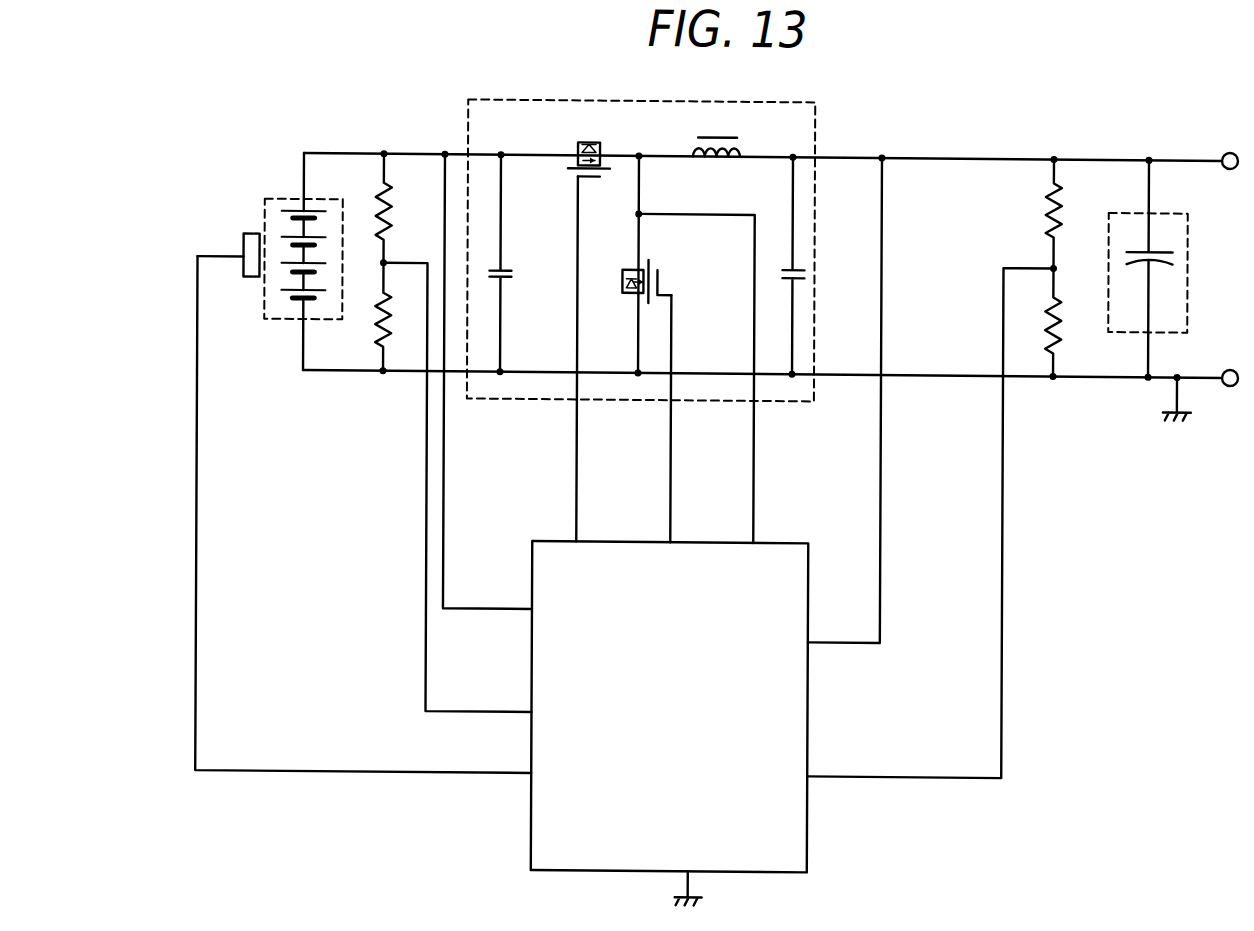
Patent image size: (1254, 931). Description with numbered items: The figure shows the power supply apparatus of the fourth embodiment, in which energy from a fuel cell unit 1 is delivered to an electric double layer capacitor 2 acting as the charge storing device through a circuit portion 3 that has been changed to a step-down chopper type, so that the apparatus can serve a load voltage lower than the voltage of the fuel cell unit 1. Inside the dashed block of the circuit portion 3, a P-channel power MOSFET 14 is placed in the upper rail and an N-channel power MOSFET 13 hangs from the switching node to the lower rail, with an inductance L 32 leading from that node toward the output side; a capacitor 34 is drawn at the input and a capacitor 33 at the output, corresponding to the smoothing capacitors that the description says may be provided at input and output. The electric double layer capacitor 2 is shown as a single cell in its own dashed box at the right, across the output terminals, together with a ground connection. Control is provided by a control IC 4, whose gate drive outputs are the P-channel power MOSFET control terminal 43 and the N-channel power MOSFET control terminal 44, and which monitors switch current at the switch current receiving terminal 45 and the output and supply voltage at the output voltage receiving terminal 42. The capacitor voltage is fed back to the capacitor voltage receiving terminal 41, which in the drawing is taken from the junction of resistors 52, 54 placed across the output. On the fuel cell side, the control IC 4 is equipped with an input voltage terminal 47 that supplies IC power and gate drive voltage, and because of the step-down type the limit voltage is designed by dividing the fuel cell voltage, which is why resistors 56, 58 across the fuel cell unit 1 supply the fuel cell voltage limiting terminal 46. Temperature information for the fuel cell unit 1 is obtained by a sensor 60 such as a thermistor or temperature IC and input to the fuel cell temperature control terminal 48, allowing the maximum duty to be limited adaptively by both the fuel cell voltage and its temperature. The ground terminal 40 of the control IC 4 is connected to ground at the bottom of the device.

The fuel cell unit 1 is at (288, 198).
The electric double layer capacitor 2 is at (1189, 231).
The circuit portion 3 is at (467, 106).
The control IC 4 is at (811, 851).
The N-channel power MOSFET 13 is at (646, 258).
The P-channel power MOSFET 14 is at (590, 133).
The inductance L 32 is at (720, 128).
The output capacitor 33 is at (806, 271).
The input capacitor 34 is at (513, 271).
The GND terminal 40 is at (688, 888).
The EDLC voltage receiving terminal (FBout) 41 is at (846, 770).
The output voltage and supply voltage receiving terminal (Vout) 42 is at (843, 636).
The P-channel power MOSFET control terminal (TG) 43 is at (579, 503).
The N-channel power MOSFET control terminal (BG) 44 is at (673, 503).
The switch current receiving terminal (SENSE) 45 is at (756, 503).
The fuel cell voltage limiting terminal (Vlim) 46 is at (476, 709).
The Vin terminal 47 is at (484, 606).
The fuel cell temperature control terminal (TEMP) 48 is at (467, 770).
The feedback resistor 52 is at (1063, 201).
The feedback resistor 54 is at (1062, 339).
The voltage divider resistor 56 is at (393, 197).
The voltage divider resistor 58 is at (372, 328).
The sensor 60 is at (250, 233).